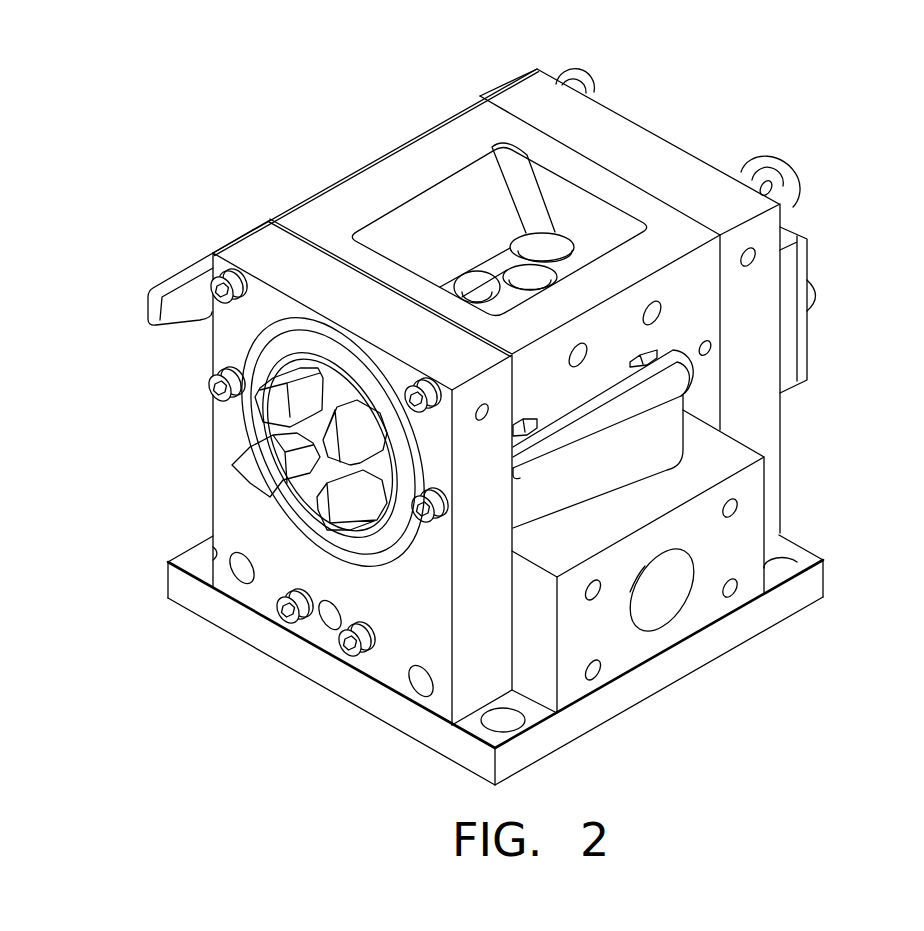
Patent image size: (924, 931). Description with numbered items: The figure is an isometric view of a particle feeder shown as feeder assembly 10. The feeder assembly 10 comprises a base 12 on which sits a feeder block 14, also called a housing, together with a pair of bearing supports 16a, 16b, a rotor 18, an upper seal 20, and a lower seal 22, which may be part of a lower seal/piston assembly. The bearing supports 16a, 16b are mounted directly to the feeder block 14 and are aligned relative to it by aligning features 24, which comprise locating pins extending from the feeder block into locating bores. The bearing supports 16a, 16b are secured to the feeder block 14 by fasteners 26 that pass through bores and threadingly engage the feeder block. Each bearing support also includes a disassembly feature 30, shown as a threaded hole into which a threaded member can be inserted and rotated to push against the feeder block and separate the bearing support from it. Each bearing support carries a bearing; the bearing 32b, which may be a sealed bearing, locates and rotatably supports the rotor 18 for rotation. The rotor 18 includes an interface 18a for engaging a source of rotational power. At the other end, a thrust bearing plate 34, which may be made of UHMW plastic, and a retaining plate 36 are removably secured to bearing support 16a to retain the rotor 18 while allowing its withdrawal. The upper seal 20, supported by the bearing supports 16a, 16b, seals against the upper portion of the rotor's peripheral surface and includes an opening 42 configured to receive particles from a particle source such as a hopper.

The feeder assembly 10 is at (732, 108).
The base 12 is at (805, 586).
The feeder block 14 is at (743, 526).
The bearing support 16a is at (765, 448).
The bearing support 16b is at (463, 645).
The rotor 18 is at (300, 428).
The interface 18a is at (338, 510).
The upper seal 20 is at (448, 124).
The lower seal 22 is at (668, 432).
The aligning features 24 is at (215, 591).
The fasteners 26 is at (272, 613).
The disassembly feature 30 is at (322, 628).
The bearing 32b is at (292, 347).
The thrust bearing plate 34 is at (792, 357).
The retaining plate 36 is at (802, 317).
The opening 42 is at (405, 212).